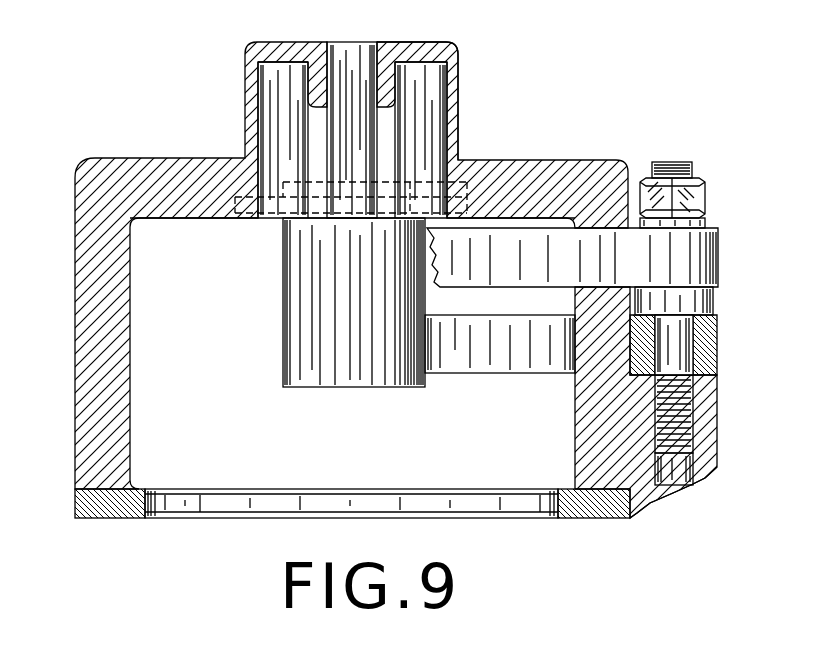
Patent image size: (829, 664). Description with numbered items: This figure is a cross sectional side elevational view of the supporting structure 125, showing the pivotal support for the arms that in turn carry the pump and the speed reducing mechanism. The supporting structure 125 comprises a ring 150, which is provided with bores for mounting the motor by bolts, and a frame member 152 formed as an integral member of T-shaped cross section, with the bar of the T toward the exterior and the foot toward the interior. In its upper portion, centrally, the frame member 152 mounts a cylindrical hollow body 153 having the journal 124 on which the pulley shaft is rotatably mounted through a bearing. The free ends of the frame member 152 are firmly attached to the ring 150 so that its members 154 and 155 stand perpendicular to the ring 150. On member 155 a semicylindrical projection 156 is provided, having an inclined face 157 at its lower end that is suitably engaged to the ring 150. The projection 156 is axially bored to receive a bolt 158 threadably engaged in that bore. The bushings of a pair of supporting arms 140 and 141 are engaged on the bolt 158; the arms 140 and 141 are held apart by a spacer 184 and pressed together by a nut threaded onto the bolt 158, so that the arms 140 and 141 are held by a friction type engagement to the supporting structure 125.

The supporting structure 125 is at (168, 129).
The journal 124 is at (352, 214).
The supporting arm 140 is at (602, 364).
The supporting arm 141 is at (572, 270).
The ring 150 is at (352, 487).
The frame member 152 is at (538, 178).
The cylindrical hollow body 153 is at (449, 101).
The member of the frame member 154 is at (201, 265).
The member of the frame member 155 is at (615, 402).
The semicylindrical projection 156 is at (735, 474).
The inclined face 157 is at (703, 483).
The bolt 158 is at (692, 164).
The spacer 184 is at (701, 294).